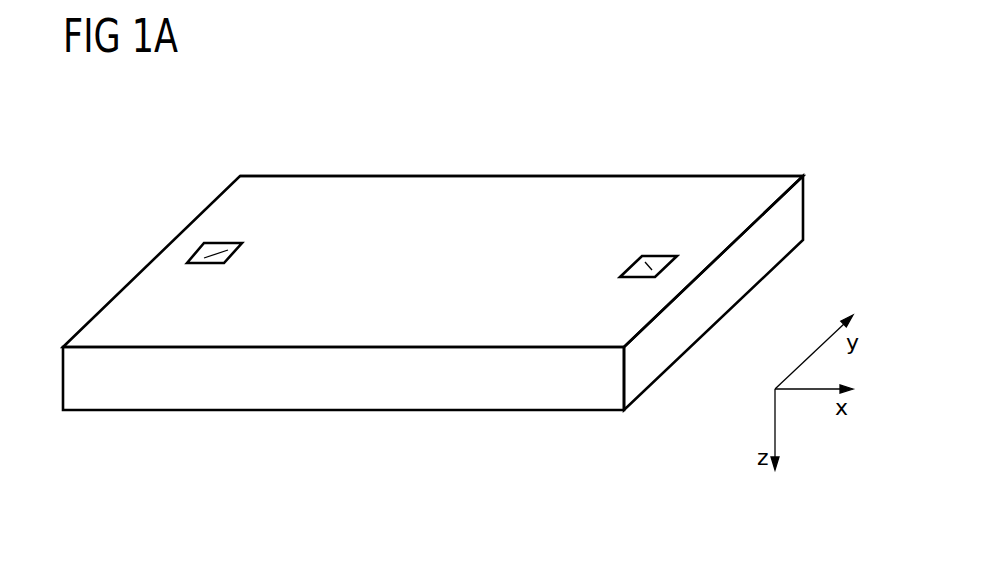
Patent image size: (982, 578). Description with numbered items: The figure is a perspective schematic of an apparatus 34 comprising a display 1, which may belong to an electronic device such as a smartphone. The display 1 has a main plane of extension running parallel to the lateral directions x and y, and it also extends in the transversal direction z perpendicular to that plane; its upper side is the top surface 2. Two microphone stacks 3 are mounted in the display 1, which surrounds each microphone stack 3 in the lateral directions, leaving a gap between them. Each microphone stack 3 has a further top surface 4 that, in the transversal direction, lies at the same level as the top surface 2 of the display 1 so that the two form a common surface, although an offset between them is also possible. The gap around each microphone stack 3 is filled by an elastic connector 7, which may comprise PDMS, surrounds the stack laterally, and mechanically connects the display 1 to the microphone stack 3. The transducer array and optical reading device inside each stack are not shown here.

The display 1 is at (521, 188).
The top surface 2 is at (349, 186).
The microphone stack 3 is at (213, 254).
The further top surface 4 is at (648, 266).
The elastic connector 7 is at (223, 241).
The apparatus 34 is at (746, 112).